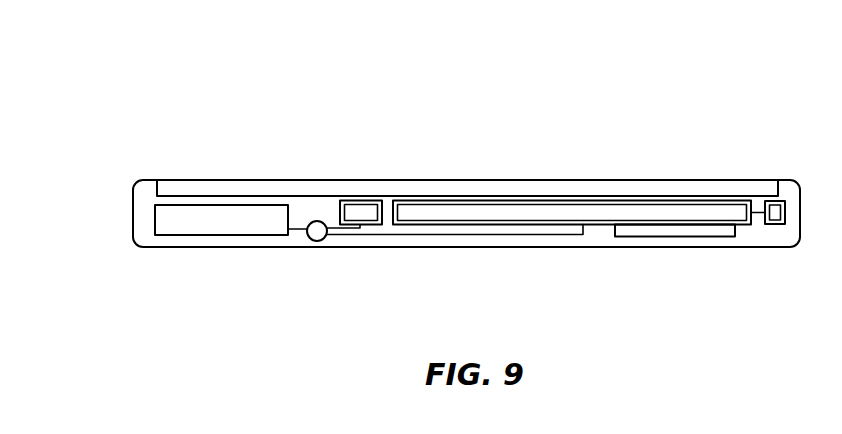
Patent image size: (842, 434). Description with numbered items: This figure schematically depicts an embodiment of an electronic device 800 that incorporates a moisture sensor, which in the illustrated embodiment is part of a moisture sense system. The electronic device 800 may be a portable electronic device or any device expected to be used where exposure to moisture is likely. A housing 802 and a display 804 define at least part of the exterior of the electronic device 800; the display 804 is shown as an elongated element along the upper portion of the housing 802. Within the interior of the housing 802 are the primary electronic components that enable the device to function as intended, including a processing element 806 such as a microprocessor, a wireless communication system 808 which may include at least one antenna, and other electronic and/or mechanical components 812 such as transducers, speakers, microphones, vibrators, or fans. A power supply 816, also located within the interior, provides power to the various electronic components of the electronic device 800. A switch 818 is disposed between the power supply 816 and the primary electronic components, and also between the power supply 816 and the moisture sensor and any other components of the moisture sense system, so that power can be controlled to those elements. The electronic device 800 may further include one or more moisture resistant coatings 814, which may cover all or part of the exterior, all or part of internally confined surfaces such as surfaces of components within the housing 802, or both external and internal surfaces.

The electronic device 800 is at (147, 104).
The housing 802 is at (133, 213).
The display 804 is at (226, 181).
The processing element 806 is at (628, 224).
The wireless communication system 808 is at (777, 223).
The other electronic and/or mechanical components 812 is at (552, 210).
The moisture resistant coating 814 is at (363, 200).
The power supply 816 is at (213, 221).
The switch 818 is at (316, 233).